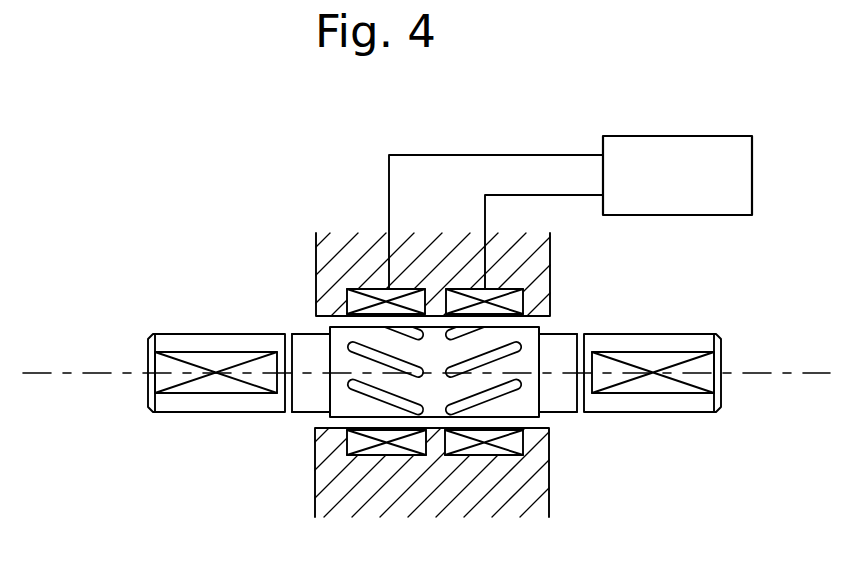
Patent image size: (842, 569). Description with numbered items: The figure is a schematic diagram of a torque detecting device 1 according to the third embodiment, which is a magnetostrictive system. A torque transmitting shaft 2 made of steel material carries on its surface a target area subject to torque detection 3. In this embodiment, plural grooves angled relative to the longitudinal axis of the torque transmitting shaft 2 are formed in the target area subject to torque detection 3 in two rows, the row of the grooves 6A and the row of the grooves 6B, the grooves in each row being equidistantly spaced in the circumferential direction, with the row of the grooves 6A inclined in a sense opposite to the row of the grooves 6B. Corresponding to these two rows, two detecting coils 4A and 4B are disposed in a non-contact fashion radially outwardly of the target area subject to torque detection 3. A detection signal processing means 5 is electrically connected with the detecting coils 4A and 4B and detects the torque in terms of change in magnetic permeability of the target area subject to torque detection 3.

The torque detecting device 1 is at (284, 254).
The torque transmitting shaft 2 is at (202, 334).
The target area subject to torque detection 3 is at (403, 418).
The detecting coil 4A is at (377, 288).
The detecting coil 4B is at (462, 288).
The detection signal processing means 5 is at (683, 136).
The row of grooves 6A is at (350, 386).
The row of grooves 6B is at (519, 351).